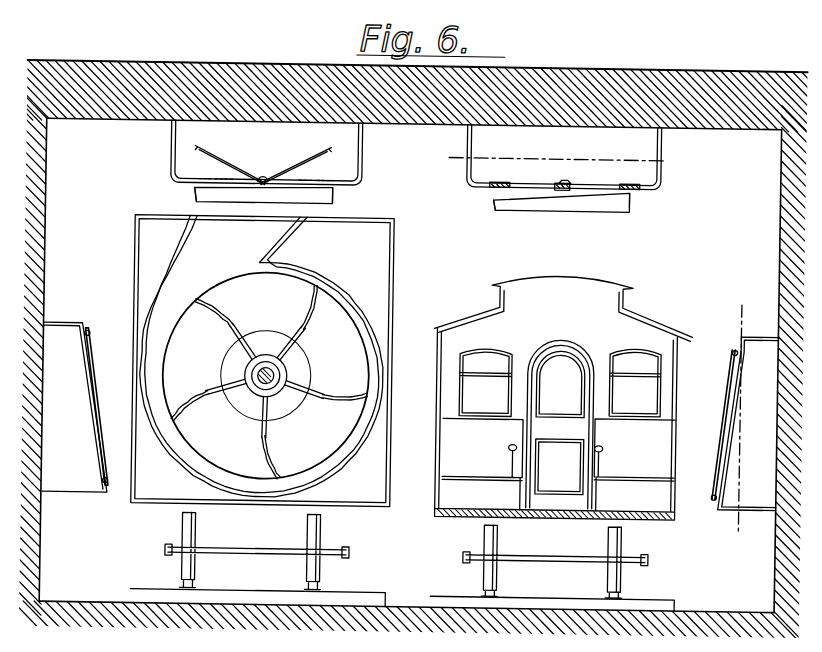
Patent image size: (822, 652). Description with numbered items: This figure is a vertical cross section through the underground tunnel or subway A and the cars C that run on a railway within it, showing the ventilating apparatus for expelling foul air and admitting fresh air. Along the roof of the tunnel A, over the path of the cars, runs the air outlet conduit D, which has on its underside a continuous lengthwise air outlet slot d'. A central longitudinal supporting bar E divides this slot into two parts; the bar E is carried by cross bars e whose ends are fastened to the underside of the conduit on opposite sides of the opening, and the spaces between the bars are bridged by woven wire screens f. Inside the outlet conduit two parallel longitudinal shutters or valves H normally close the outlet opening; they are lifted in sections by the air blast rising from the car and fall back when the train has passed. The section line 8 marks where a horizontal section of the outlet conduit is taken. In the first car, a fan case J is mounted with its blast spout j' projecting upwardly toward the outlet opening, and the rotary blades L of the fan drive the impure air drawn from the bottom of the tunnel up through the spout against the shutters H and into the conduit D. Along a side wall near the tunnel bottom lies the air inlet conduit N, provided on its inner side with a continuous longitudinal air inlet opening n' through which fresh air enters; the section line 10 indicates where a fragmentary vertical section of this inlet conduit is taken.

The tunnel or subway A is at (700, 253).
The cars C is at (411, 413).
The air outlet conduit D is at (416, 154).
The shutters or valves H is at (418, 164).
The screens f is at (208, 182).
The cross bars e is at (192, 197).
The supporting bar E is at (262, 188).
The air outlet slot d' is at (486, 210).
The section line 8- 8 is at (556, 158).
The blast spout j' is at (261, 357).
The rotary blades L is at (229, 324).
The fan case J is at (343, 470).
The air inlet conduit N is at (60, 457).
The air inlet opening n' is at (407, 414).
The section line 10- 10 is at (755, 312).